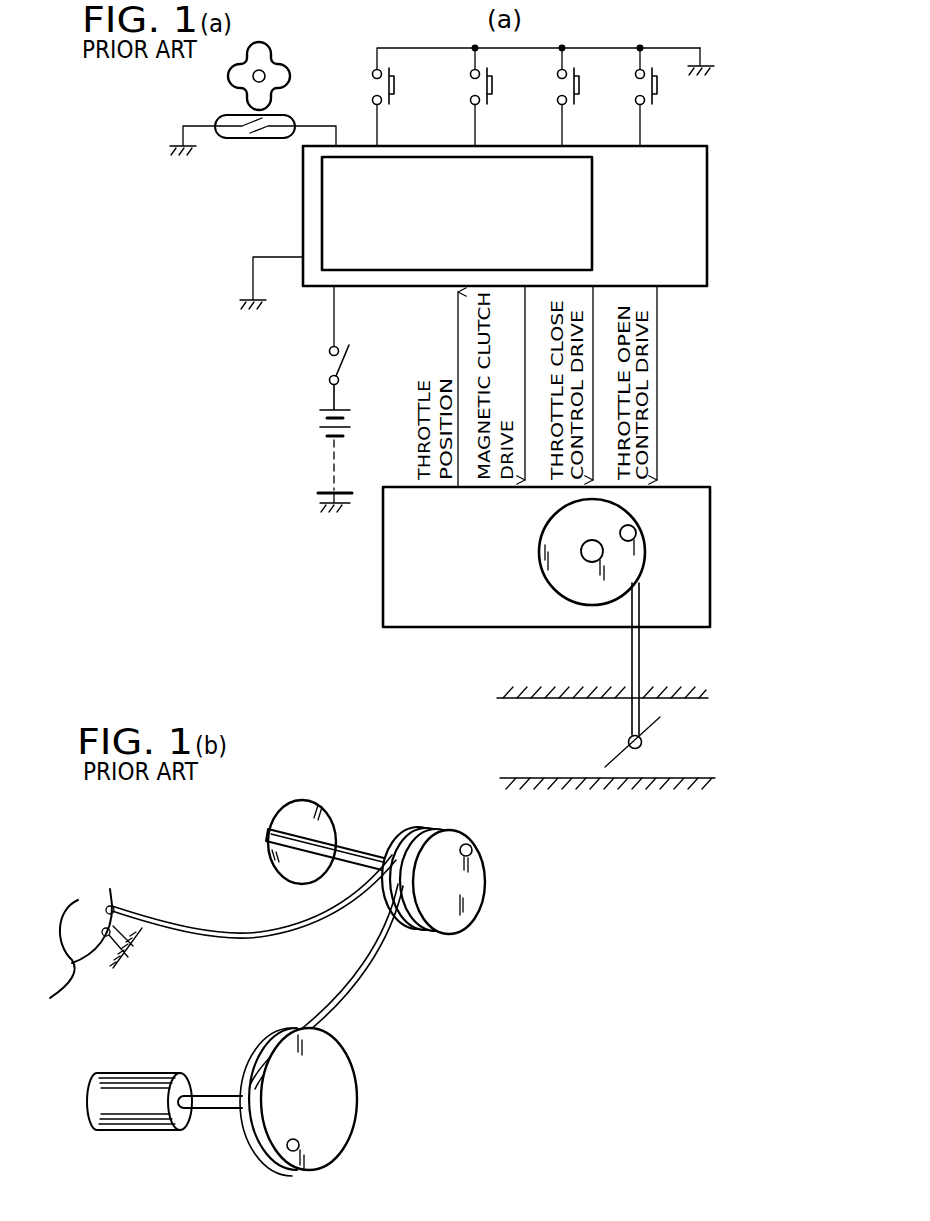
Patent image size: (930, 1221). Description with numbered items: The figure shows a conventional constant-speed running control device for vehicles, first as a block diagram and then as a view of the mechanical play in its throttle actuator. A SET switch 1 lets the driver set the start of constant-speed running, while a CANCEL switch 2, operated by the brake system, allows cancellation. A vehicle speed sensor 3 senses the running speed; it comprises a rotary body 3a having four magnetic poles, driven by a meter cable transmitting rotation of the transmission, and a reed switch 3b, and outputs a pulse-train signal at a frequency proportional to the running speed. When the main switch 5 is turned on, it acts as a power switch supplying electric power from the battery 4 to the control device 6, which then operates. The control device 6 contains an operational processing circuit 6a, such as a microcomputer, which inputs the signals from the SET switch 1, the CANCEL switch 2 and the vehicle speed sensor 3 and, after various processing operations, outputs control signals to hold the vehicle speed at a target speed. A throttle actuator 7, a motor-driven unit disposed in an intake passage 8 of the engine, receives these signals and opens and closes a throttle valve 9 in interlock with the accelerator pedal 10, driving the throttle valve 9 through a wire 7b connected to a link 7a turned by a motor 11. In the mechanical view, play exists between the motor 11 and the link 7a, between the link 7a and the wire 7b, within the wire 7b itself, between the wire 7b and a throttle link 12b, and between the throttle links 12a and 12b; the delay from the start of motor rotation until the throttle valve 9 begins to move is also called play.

In FIG. 1A, the SET switch 1 is at (657, 82).
In FIG. 1A, the CANCEL switch 2 is at (370, 82).
In FIG. 1A, the vehicle speed sensor 3 is at (242, 99).
In FIG. 1A, the rotary body 3a is at (283, 64).
In FIG. 1A, the reed switch 3b is at (241, 140).
In FIG. 1A, the battery 4 is at (320, 437).
In FIG. 1A, the main switch 5 is at (350, 360).
In FIG. 1A, the control device 6 is at (708, 246).
In FIG. 1A, the operational processing circuit 6a is at (321, 226).
In FIG. 1A, the throttle actuator 7 is at (711, 591).
In FIG. 1A, the link 7a is at (641, 541).
In FIG. 1B, the link 7a is at (357, 1077).
In FIG. 1A, the wire 7b is at (641, 659).
In FIG. 1B, the wire 7b is at (373, 960).
In FIG. 1A, the intake passage 8 is at (530, 742).
In FIG. 1A, the throttle valve 9 is at (645, 745).
In FIG. 1B, the throttle valve 9 is at (306, 808).
In FIG. 1B, the accelerator pedal 10 is at (96, 936).
In FIG. 1B, the motor 11 is at (145, 1072).
In FIG. 1B, the throttle link 12a is at (485, 866).
In FIG. 1B, the throttle link 12b is at (403, 827).